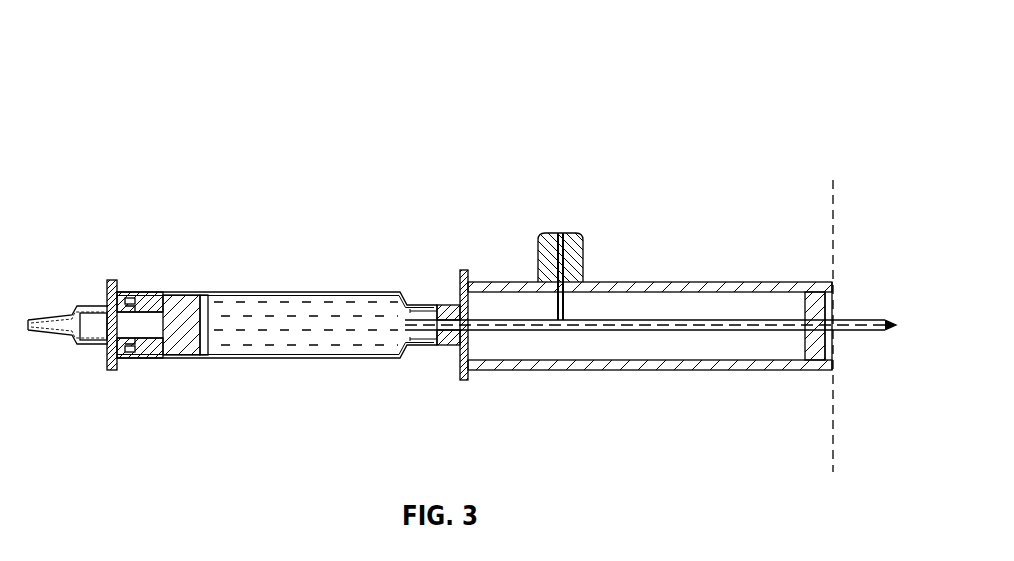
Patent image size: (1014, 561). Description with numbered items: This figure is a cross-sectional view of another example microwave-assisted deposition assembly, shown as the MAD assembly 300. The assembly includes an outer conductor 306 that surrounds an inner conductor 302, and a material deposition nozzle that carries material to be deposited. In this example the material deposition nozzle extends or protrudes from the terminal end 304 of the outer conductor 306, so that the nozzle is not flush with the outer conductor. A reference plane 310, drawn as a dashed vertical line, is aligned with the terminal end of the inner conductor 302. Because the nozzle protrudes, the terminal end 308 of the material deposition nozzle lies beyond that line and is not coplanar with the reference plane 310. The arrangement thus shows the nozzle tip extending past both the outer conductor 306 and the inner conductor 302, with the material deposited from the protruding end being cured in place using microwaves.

The MAD assembly 300 is at (257, 137).
The inner conductor 302 is at (730, 318).
The terminal end of outer conductor 304 is at (830, 370).
The outer conductor 306 is at (663, 288).
The terminal end of material deposition nozzle 308 is at (865, 320).
The reference plane 310 is at (833, 452).